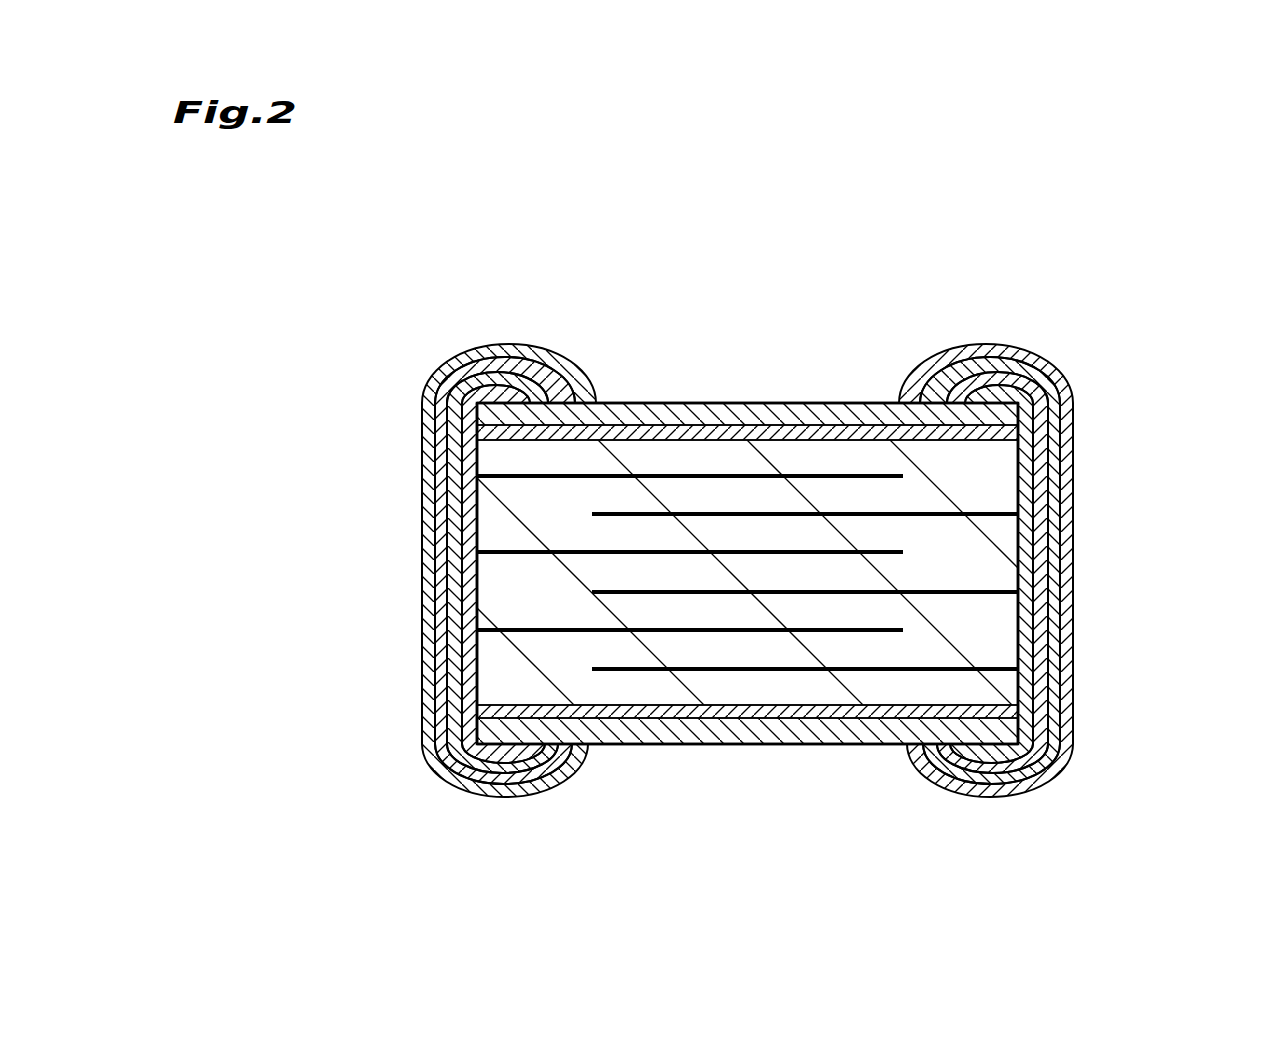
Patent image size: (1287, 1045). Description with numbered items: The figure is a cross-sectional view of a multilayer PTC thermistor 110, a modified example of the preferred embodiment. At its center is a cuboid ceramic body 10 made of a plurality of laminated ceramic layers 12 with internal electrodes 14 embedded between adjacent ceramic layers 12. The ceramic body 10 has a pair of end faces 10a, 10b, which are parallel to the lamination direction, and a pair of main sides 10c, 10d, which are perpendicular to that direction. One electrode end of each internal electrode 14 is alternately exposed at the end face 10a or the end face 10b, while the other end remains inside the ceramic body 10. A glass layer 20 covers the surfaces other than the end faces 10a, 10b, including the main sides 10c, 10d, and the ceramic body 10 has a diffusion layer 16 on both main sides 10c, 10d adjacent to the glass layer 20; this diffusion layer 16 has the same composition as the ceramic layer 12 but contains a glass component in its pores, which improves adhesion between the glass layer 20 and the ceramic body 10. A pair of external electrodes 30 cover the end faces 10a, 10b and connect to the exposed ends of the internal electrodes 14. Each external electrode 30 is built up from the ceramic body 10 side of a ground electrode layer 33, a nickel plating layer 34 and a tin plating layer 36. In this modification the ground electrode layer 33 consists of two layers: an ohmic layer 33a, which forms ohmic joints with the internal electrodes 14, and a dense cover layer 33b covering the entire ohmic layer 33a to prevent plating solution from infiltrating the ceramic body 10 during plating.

The multilayer PTC thermistor 110 is at (928, 234).
The ceramic body 10 is at (1146, 408).
The end face 10a is at (1020, 617).
The end face 10b is at (474, 493).
The main side 10c is at (672, 425).
The main side 10d is at (668, 718).
The ceramic layer 12 is at (947, 487).
The internal electrode 14 is at (997, 513).
The diffusion layer 16 is at (1013, 435).
The glass layer 20 is at (803, 413).
The external electrode 30 is at (290, 570).
The ground electrode layer 33 is at (346, 550).
The ohmic layer 33a is at (470, 600).
The cover layer 33b is at (452, 560).
The nickel plating layer 34 is at (440, 647).
The tin plating layer 36 is at (423, 683).